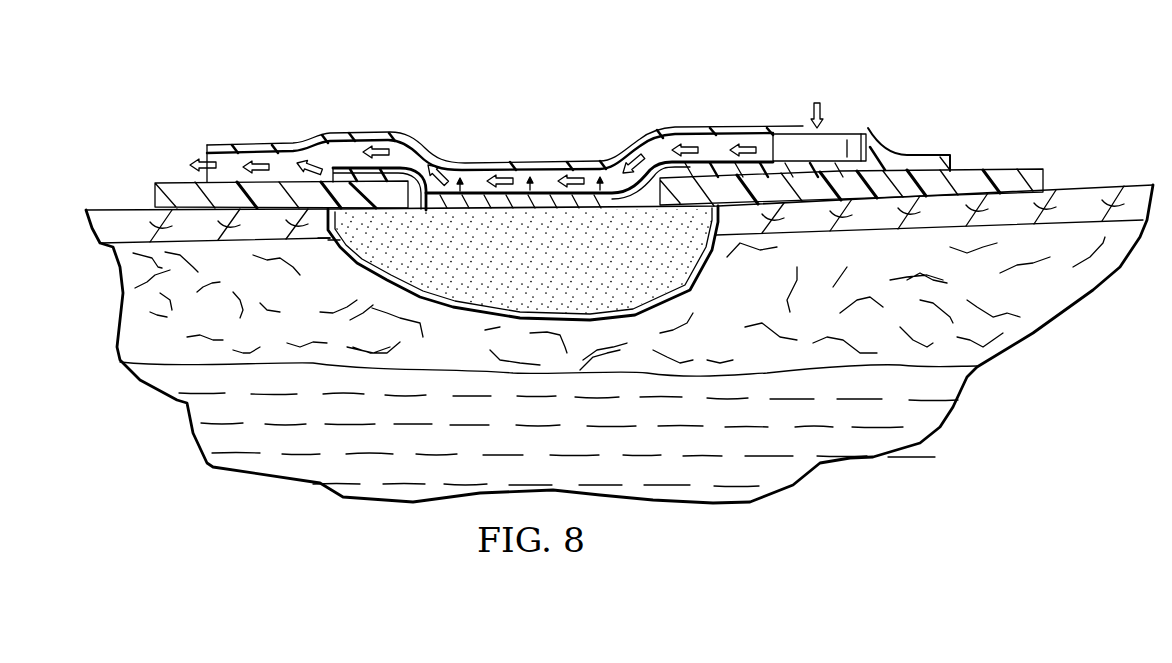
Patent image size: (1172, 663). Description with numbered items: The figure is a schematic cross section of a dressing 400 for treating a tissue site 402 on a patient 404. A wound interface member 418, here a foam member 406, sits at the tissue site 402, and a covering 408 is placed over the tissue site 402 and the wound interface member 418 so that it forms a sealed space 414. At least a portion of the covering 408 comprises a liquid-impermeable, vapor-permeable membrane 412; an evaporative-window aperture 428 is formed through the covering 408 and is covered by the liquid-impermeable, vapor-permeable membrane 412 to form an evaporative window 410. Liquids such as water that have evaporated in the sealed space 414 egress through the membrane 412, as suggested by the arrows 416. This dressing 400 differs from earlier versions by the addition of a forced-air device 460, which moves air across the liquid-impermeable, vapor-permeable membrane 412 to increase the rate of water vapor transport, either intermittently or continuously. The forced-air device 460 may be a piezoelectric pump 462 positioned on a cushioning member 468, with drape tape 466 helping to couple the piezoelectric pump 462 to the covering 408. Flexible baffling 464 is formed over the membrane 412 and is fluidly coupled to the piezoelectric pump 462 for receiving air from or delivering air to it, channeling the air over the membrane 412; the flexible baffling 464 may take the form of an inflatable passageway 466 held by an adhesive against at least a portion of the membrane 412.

The dressing 400 is at (689, 71).
The tissue site 402 is at (702, 272).
The patient 404 is at (1020, 343).
The foam member 406 is at (568, 274).
The covering 408 is at (353, 190).
The evaporative window 410 is at (614, 194).
The liquid-impermeable, vapor-permeable membrane 412 is at (473, 204).
The sealed space 414 is at (357, 278).
The arrows 416 is at (531, 184).
The wound interface member 418 is at (460, 285).
The aperture 428 is at (418, 212).
The forced-air device 460 is at (833, 150).
The piezoelectric pump 462 is at (829, 130).
The flexible baffling 464 is at (250, 151).
The drape tape 466 is at (937, 165).
The cushioning member 468 is at (870, 157).